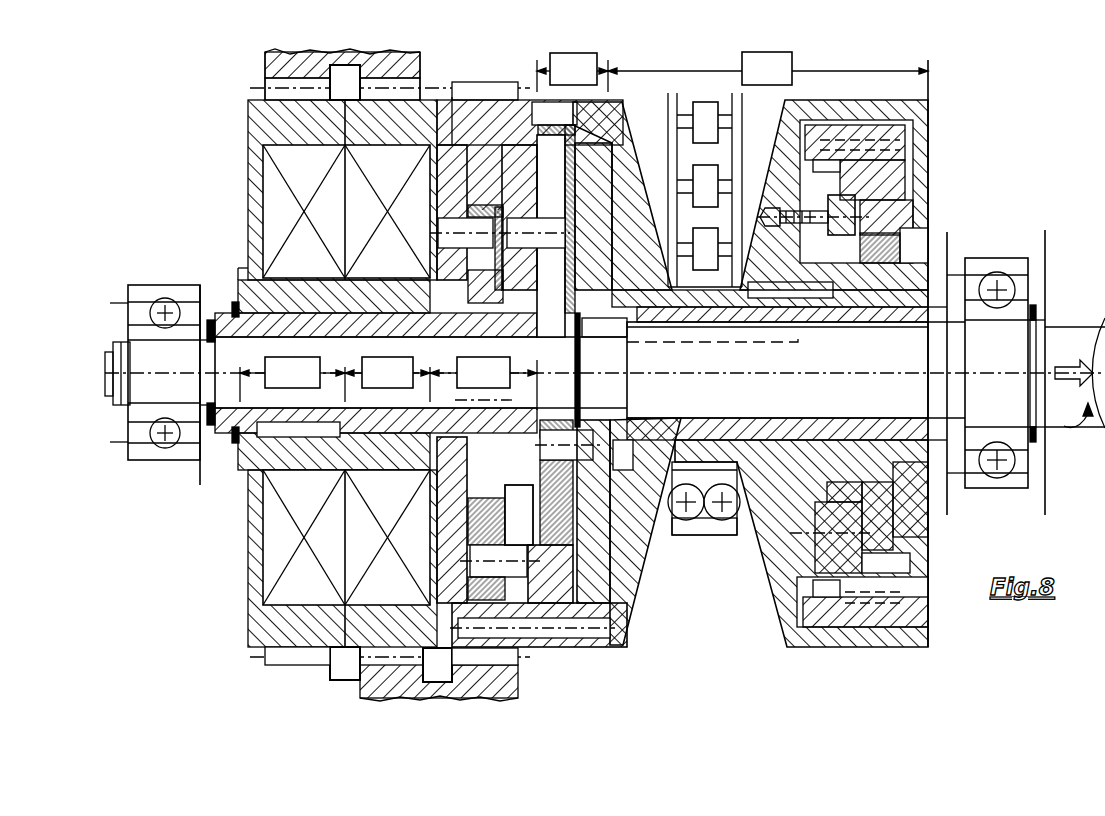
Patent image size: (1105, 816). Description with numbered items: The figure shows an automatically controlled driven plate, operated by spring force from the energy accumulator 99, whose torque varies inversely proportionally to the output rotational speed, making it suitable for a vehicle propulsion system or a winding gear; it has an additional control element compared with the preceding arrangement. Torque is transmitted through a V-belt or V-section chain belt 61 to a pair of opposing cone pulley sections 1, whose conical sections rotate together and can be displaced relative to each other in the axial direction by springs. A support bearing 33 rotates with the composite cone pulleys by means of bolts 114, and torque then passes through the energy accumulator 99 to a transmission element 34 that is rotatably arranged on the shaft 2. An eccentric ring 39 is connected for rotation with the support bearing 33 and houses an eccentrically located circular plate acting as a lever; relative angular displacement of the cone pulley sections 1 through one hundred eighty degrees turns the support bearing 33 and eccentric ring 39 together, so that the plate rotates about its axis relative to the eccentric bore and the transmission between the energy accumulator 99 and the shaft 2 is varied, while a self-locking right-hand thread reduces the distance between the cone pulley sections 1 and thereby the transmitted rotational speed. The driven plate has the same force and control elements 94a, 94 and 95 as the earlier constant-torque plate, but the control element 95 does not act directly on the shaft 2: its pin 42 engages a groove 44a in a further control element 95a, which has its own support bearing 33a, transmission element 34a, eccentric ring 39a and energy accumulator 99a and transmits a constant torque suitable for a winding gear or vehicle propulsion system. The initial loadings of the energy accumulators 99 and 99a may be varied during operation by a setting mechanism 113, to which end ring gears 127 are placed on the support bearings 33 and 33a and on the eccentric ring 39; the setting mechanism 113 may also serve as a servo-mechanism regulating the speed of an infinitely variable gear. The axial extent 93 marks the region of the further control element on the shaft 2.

The cone pulley sections 1 is at (785, 603).
The shaft 2 is at (1066, 336).
The support bearing 33 is at (370, 130).
The support bearing 33a is at (262, 125).
The transmission element 34 is at (448, 185).
The transmission element 34a is at (255, 295).
The eccentric ring 39 is at (475, 112).
The eccentric ring 39a is at (520, 527).
The pin 42 is at (508, 567).
The groove 44a is at (580, 598).
The V-belt or V-section chain belt 61 is at (675, 528).
The axial dimension 93 is at (768, 68).
The control element 94 is at (387, 379).
The control element 94a is at (292, 379).
The control element 95 is at (483, 383).
The further control element 95a is at (572, 72).
The energy accumulator 99 is at (377, 543).
The energy accumulator 99a is at (302, 540).
The setting mechanism 113 is at (330, 66).
The bolts 114 is at (608, 622).
The ring gears 127 is at (462, 88).